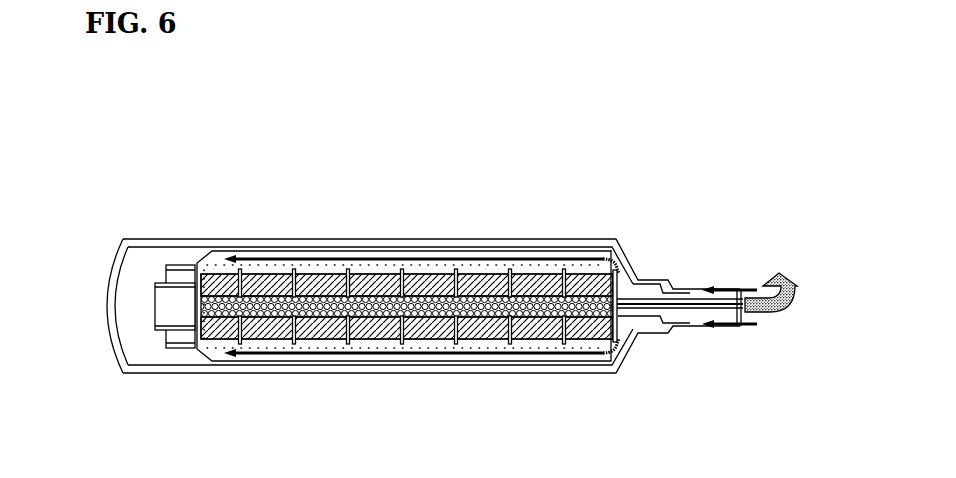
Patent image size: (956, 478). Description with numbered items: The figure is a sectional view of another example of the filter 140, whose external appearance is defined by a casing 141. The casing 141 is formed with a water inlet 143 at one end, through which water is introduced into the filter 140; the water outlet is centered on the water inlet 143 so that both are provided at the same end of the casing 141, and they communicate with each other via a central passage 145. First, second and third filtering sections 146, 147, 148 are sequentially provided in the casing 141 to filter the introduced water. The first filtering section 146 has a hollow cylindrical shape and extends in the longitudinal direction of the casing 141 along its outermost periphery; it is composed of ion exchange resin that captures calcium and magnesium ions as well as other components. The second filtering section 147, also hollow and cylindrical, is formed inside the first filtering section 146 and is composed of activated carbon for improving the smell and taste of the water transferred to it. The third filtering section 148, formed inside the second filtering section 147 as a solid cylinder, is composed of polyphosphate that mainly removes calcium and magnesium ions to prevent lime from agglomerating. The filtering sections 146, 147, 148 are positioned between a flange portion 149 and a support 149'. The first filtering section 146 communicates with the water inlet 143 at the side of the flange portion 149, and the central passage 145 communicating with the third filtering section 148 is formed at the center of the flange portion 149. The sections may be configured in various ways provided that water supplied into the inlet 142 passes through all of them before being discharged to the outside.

The filter 140 is at (546, 229).
The casing 141 is at (440, 247).
The inlet 142 is at (697, 289).
The water inlet 143 is at (756, 311).
The central passage 145 is at (652, 313).
The first filtering section 146 is at (395, 267).
The second filtering section 147 is at (368, 279).
The third filtering section 148 is at (326, 284).
The flange portion 149 is at (630, 265).
The support 149' is at (114, 306).